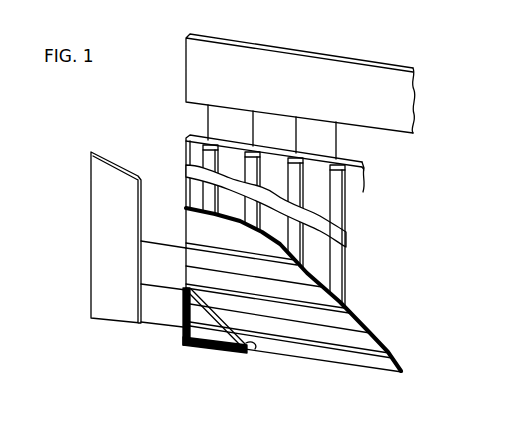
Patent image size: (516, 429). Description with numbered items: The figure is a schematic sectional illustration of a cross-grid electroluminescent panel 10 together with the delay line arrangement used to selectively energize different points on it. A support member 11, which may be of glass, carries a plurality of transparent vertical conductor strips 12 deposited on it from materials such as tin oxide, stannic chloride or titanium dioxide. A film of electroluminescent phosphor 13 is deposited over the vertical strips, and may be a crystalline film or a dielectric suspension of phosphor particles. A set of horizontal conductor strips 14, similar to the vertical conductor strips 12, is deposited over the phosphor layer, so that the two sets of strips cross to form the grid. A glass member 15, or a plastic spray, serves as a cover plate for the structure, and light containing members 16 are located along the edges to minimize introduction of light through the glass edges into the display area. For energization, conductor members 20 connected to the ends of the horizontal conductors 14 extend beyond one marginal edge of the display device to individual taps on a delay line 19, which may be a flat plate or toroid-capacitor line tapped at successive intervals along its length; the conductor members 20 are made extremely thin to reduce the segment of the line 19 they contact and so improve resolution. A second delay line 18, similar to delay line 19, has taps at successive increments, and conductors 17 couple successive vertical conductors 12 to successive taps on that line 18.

The electroluminescent panel 10 is at (466, 256).
The support member 11 is at (352, 162).
The vertical conductor strips 12 is at (203, 158).
The electroluminescent phosphor film 13 is at (352, 312).
The horizontal conductor strips 14 is at (350, 358).
The glass member 15 is at (250, 349).
The light containing members 16 is at (188, 346).
The conductors 17 is at (207, 122).
The delay line 18 is at (377, 72).
The delay line 19 is at (103, 313).
The conductor members 20 is at (157, 323).